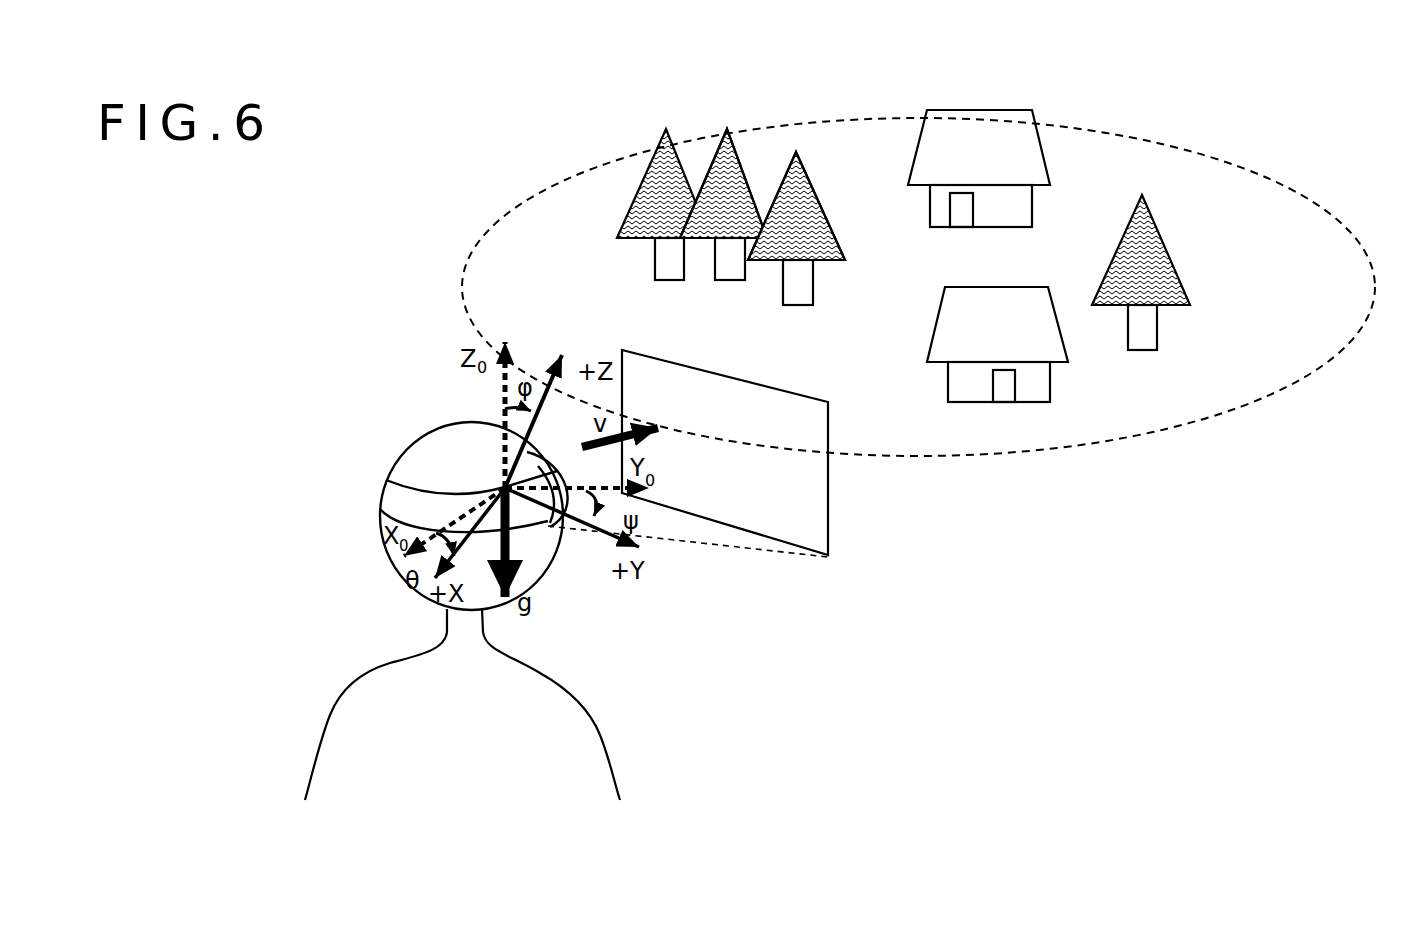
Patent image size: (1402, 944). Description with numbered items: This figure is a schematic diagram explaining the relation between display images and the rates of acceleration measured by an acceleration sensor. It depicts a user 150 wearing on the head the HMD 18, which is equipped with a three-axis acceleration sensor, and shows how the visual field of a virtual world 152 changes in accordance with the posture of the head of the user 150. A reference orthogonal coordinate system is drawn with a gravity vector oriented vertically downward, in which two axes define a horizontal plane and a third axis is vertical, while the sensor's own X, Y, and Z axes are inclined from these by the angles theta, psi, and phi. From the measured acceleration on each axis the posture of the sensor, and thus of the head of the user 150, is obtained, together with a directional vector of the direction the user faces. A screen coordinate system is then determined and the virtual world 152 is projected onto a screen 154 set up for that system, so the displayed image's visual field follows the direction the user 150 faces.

The HMD 18 is at (393, 488).
The user 150 is at (600, 760).
The virtual world 152 is at (1107, 132).
The screen 154 is at (833, 530).